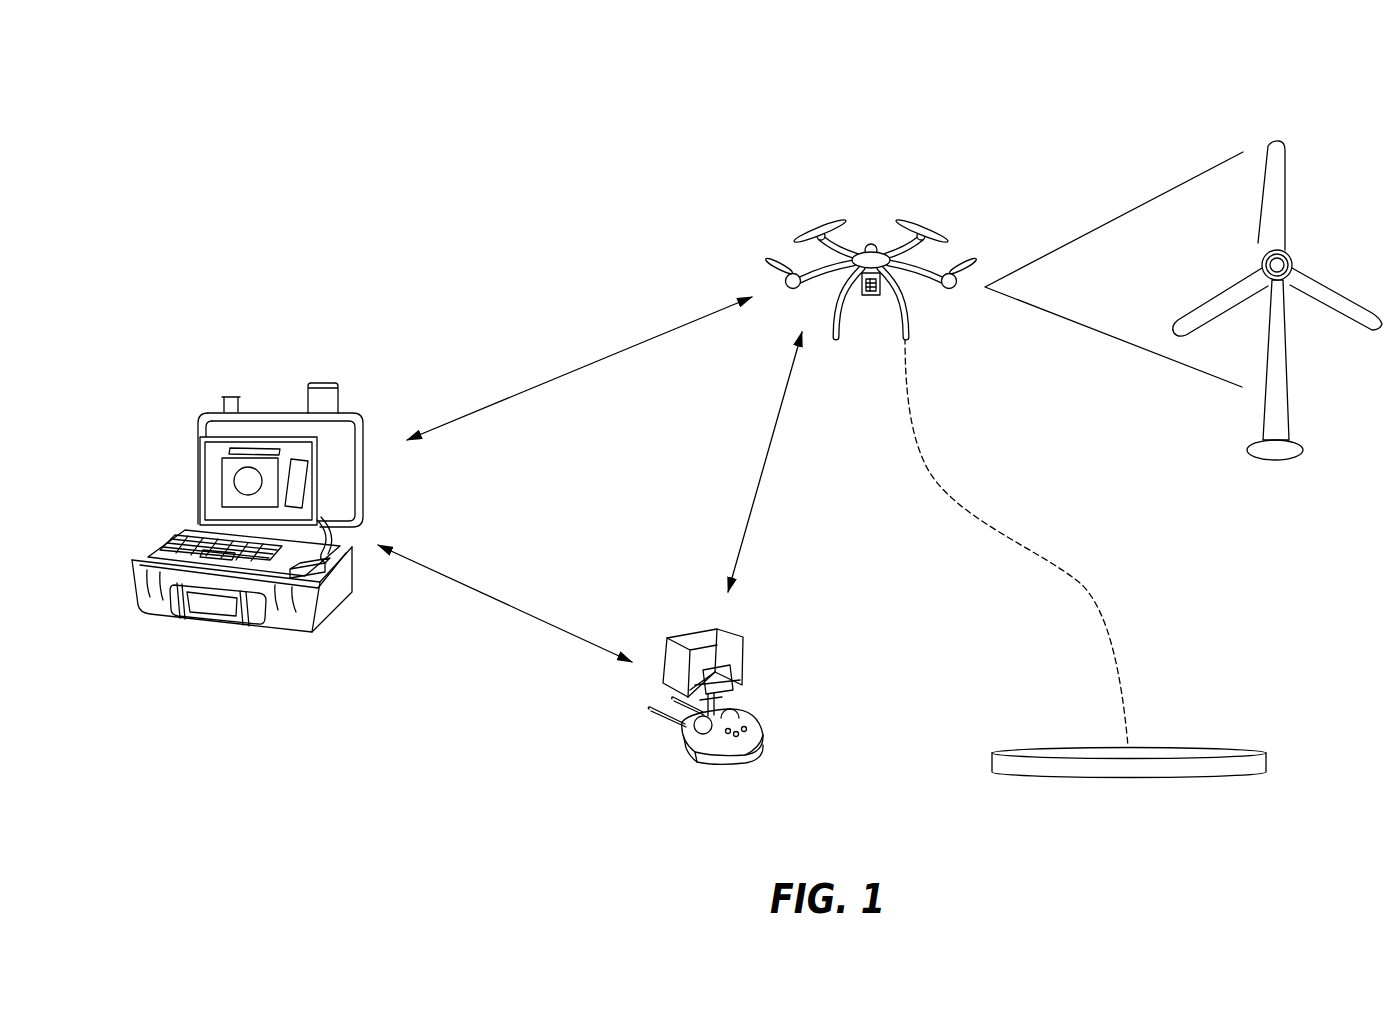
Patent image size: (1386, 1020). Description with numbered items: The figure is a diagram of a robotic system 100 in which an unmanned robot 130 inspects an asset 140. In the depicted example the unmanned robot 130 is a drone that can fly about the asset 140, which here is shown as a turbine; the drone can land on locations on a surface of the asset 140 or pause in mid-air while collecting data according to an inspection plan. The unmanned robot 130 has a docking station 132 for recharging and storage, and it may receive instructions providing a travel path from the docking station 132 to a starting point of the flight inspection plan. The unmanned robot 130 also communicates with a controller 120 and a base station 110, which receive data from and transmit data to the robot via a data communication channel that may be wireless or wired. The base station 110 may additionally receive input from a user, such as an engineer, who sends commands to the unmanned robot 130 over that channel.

The robotic system 100 is at (1238, 83).
The base station 110 is at (268, 410).
The controller 120 is at (664, 638).
The unmanned robot 130 is at (872, 244).
The docking station 132 is at (1210, 748).
The asset 140 is at (1289, 360).